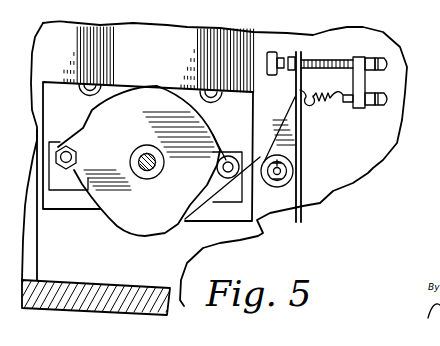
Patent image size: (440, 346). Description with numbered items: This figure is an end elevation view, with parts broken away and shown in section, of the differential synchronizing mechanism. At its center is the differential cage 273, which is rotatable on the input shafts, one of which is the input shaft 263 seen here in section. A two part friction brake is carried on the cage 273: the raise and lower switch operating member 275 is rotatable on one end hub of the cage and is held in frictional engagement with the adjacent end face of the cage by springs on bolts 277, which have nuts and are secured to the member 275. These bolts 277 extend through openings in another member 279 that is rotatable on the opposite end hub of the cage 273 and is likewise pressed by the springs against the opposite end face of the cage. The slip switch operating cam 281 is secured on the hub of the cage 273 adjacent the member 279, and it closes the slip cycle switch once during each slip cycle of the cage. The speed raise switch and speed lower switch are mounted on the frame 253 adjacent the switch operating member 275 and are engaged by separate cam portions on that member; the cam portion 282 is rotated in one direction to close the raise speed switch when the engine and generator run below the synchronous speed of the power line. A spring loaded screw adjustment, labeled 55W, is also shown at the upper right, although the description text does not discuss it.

The adjusting screw and spring assembly 55W is at (324, 52).
The slip switch operating cam 281 is at (128, 103).
The cam portion 282 is at (93, 103).
The bolts 277 is at (56, 158).
The input shaft 263 is at (130, 163).
The cage 273 is at (145, 180).
The member 279 is at (65, 183).
The raise and lower switch operating member 275 is at (92, 205).
The frame 253 is at (90, 301).